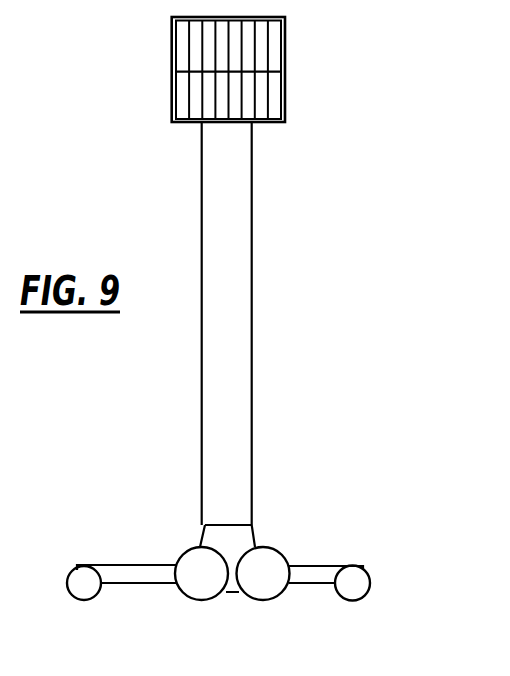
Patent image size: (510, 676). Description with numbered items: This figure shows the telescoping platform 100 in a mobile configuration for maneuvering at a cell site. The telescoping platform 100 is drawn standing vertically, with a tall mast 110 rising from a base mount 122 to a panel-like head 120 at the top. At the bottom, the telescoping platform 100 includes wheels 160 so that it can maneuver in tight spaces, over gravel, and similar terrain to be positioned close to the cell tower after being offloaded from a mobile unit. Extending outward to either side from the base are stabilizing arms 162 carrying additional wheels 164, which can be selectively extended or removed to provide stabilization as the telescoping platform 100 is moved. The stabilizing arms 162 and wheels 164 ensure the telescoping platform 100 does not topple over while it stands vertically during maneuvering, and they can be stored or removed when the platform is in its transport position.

The telescoping platform 100 is at (370, 93).
The mast 110 is at (253, 342).
The light panel head 120 is at (285, 83).
The mast base mount 122 is at (245, 540).
The wheels 160 is at (185, 600).
The stabilizing arms 162 is at (318, 567).
The wheels 164 is at (368, 583).